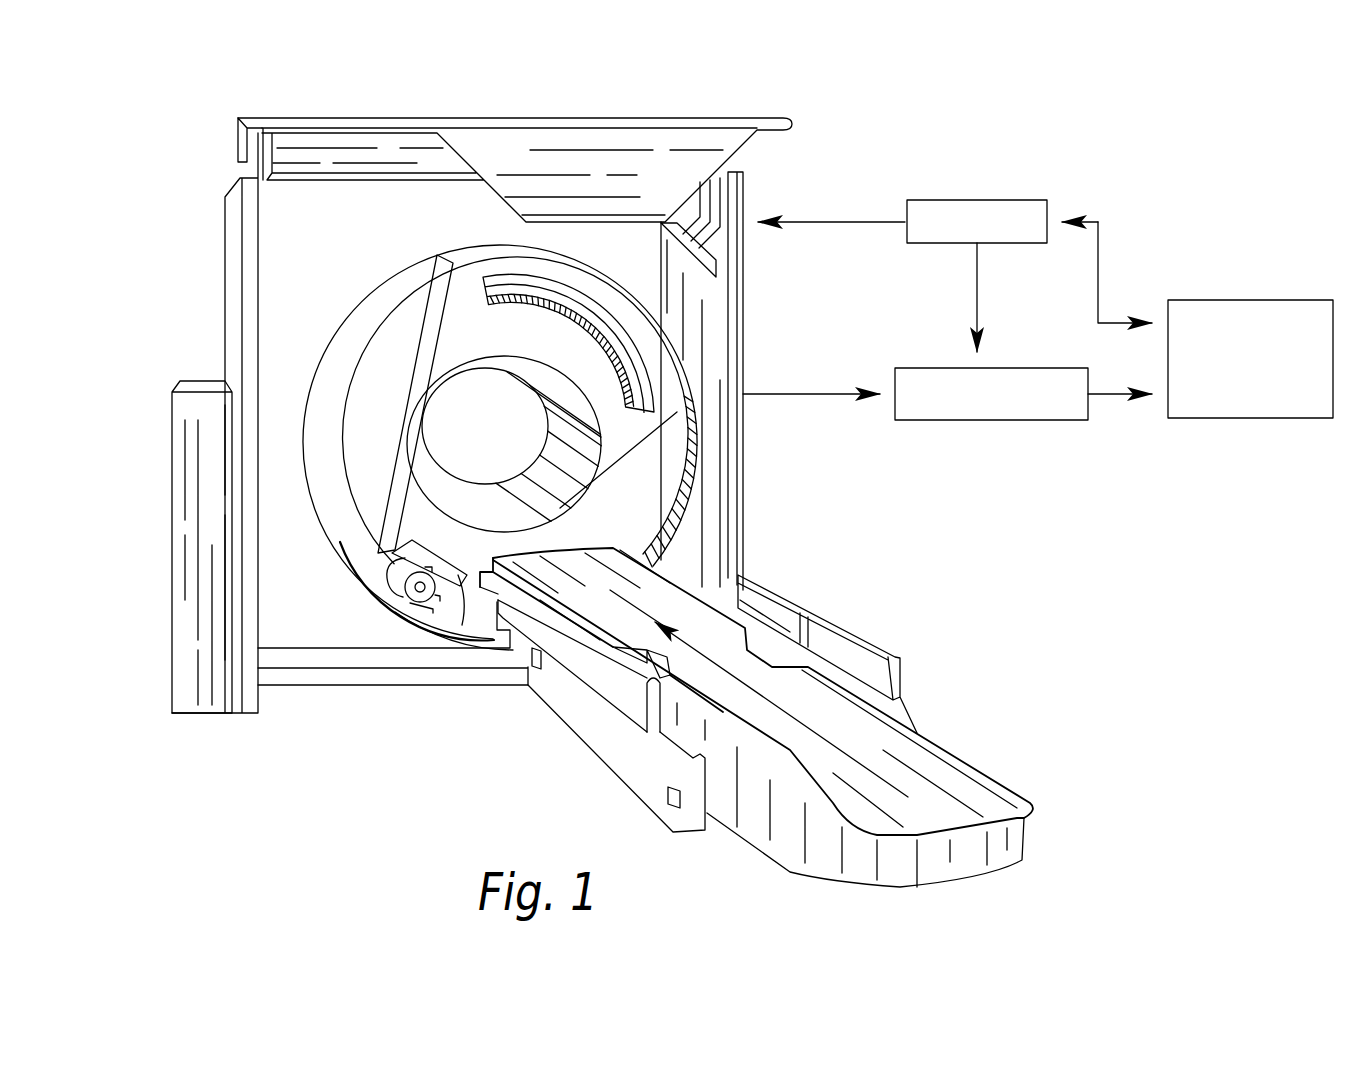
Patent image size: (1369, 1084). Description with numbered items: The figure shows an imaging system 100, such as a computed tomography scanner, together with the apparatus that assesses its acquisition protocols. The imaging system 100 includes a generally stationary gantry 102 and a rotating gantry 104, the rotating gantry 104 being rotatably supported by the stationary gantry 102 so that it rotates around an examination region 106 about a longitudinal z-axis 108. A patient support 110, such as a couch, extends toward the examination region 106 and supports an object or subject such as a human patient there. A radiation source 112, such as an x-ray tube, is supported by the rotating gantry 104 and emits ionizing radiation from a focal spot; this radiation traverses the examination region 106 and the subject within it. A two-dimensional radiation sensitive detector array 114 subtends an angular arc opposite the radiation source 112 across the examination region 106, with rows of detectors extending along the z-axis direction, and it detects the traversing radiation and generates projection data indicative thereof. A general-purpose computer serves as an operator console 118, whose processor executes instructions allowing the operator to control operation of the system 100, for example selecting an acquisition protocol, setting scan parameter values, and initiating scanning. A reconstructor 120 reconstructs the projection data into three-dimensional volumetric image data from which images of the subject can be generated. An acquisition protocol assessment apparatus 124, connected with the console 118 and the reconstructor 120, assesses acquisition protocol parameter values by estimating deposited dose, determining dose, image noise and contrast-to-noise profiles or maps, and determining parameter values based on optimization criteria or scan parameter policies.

The imaging system 100 is at (186, 118).
The stationary gantry 102 is at (248, 273).
The rotating gantry 104 is at (470, 327).
The examination region 106 is at (504, 439).
The z-axis 108 is at (706, 650).
The patient support 110 is at (937, 771).
The radiation source 112 is at (413, 603).
The detector array 114 is at (637, 350).
The operator console 118 is at (950, 200).
The reconstructor 120 is at (990, 420).
The acquisition protocol assessment apparatus 124 is at (1215, 300).